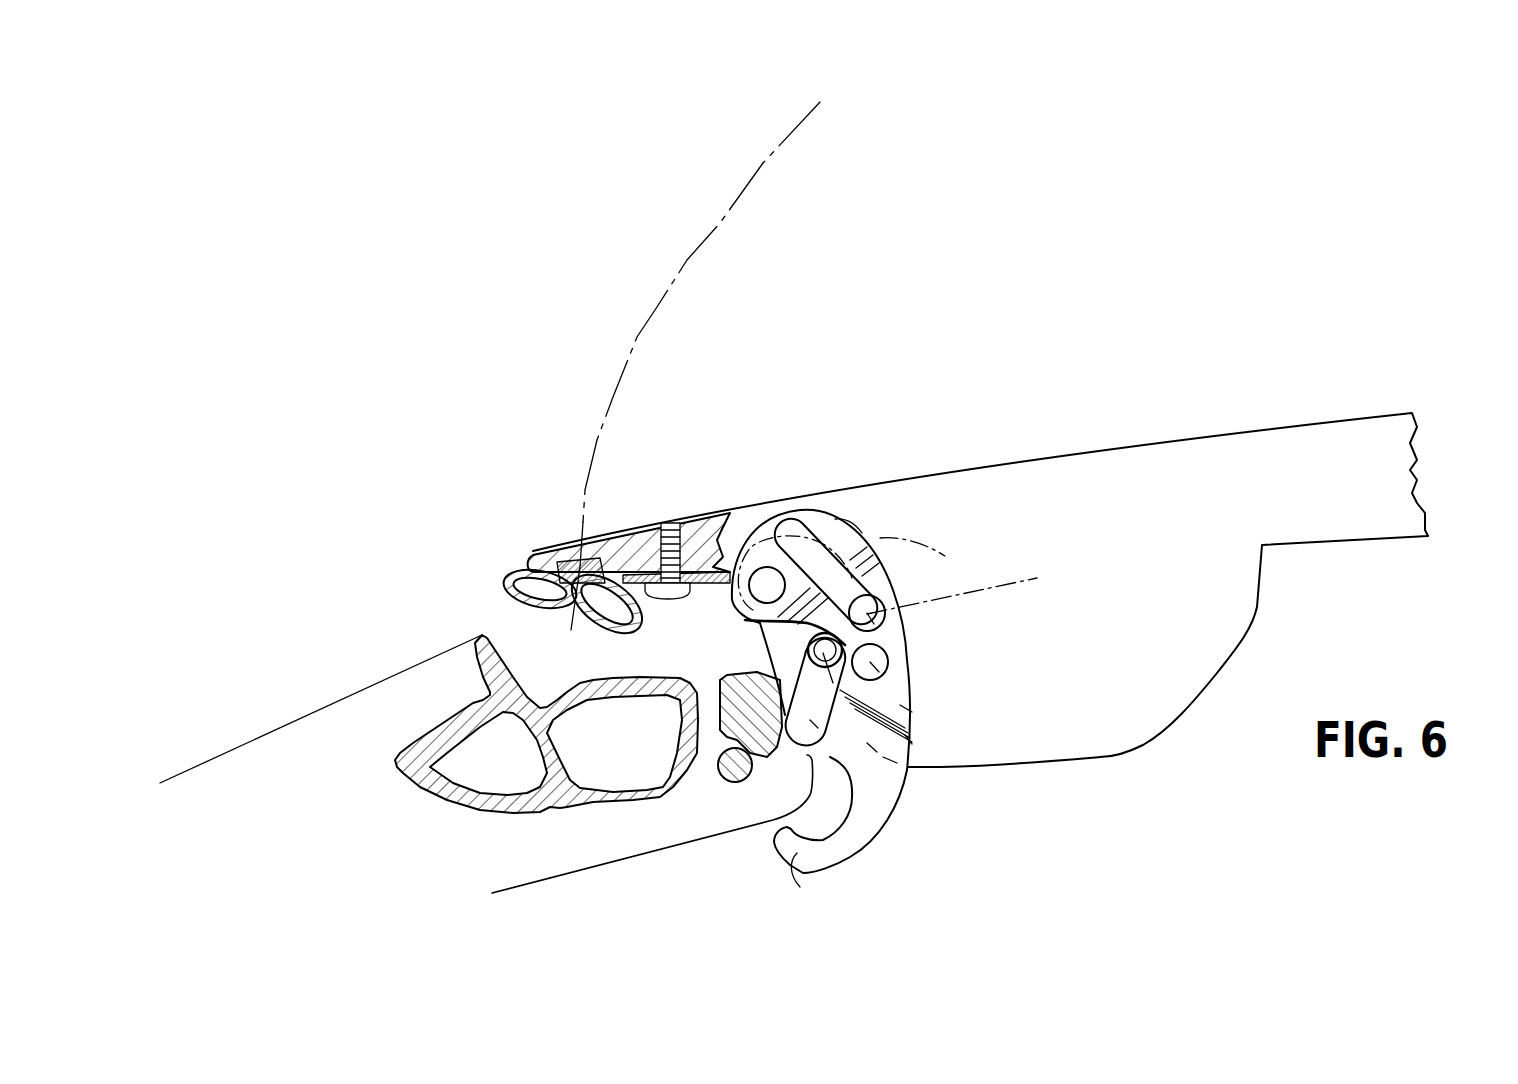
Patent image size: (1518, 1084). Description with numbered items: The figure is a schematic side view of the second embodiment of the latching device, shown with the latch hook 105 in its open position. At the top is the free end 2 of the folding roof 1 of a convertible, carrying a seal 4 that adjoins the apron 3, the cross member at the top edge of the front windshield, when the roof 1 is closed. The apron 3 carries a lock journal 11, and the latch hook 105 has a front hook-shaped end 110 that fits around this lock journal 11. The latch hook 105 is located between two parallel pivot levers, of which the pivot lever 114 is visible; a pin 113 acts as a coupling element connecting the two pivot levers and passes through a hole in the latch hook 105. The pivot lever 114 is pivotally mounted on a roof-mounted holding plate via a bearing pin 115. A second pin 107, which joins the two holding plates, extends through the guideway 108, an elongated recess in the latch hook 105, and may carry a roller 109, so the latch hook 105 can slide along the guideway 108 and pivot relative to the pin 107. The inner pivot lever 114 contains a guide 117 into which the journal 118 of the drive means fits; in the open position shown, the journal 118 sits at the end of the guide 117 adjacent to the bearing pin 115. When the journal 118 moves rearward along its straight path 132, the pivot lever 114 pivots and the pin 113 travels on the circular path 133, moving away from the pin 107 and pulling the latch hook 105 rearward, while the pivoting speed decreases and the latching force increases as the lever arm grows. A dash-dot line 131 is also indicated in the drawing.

The folding roof 1 is at (1160, 425).
The roof free end 2 is at (767, 583).
The apron 3 is at (613, 800).
The seal 4 is at (506, 598).
The lock journal 11 is at (727, 777).
The latch hook 105 is at (880, 877).
The pin 107 is at (905, 735).
The guideway 108 is at (810, 720).
The roller 109 is at (762, 640).
The front hook-shaped end 110 is at (810, 847).
The pin 113 is at (767, 567).
The pivot lever 114 is at (860, 500).
The bearing pin 115 is at (905, 705).
The guide 117 is at (830, 570).
The journal 118 is at (900, 660).
The pivot path 131 is at (638, 338).
The straight path 132 is at (1012, 582).
The circular path 133 is at (893, 532).